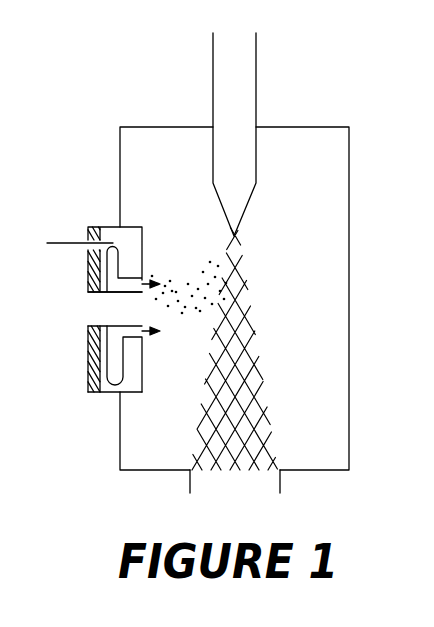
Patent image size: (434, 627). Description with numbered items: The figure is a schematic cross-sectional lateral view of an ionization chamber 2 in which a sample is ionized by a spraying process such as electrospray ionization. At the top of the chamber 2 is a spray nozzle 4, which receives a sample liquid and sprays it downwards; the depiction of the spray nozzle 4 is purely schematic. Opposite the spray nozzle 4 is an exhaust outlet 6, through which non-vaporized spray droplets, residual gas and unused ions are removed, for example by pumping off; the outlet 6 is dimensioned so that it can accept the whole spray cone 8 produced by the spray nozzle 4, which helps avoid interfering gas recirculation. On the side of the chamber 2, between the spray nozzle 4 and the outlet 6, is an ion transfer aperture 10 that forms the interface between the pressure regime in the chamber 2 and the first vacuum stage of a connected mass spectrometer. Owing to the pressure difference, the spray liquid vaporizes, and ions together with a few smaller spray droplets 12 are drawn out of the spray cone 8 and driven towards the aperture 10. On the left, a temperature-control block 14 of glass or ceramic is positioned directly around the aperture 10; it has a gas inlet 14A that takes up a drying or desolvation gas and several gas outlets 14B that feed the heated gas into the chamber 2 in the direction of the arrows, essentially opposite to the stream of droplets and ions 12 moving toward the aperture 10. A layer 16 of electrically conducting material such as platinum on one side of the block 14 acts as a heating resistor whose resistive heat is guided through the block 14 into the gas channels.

The ionization chamber 2 is at (234, 298).
The spray nozzle 4 is at (234, 134).
The exhaust outlet 6 is at (235, 489).
The spray cone 8 is at (239, 349).
The ion transfer aperture 10 is at (110, 309).
The ions and spray droplets 12 is at (189, 288).
The temperature-control block 14 is at (110, 392).
The gas inlet 14A is at (79, 232).
The gas outlets 14B is at (154, 348).
The layer of electrically conducting material 16 is at (88, 368).